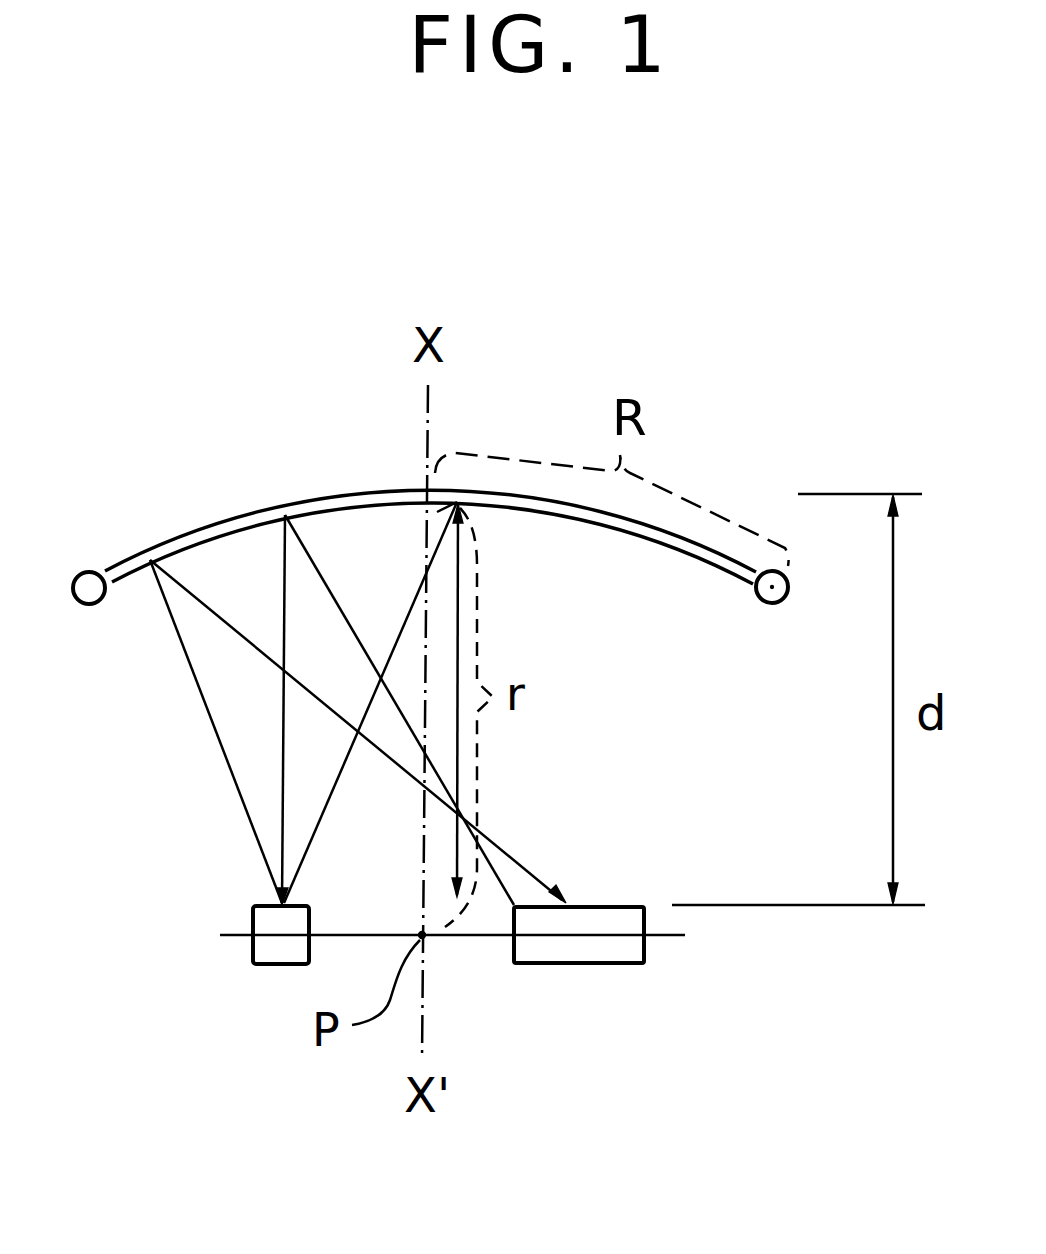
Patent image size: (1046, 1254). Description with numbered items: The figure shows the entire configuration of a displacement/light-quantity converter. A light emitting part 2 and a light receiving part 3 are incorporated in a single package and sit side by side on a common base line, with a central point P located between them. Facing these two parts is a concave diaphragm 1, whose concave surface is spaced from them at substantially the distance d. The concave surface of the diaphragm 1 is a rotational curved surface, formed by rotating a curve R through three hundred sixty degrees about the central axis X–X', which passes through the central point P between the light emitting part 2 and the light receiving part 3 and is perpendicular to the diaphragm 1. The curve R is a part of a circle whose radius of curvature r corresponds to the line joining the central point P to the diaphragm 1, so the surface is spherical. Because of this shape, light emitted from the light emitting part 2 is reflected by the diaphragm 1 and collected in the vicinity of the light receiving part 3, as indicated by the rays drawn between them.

The concave diaphragm 1 is at (242, 512).
The light emitting part 2 is at (252, 911).
The light receiving part 3 is at (570, 964).